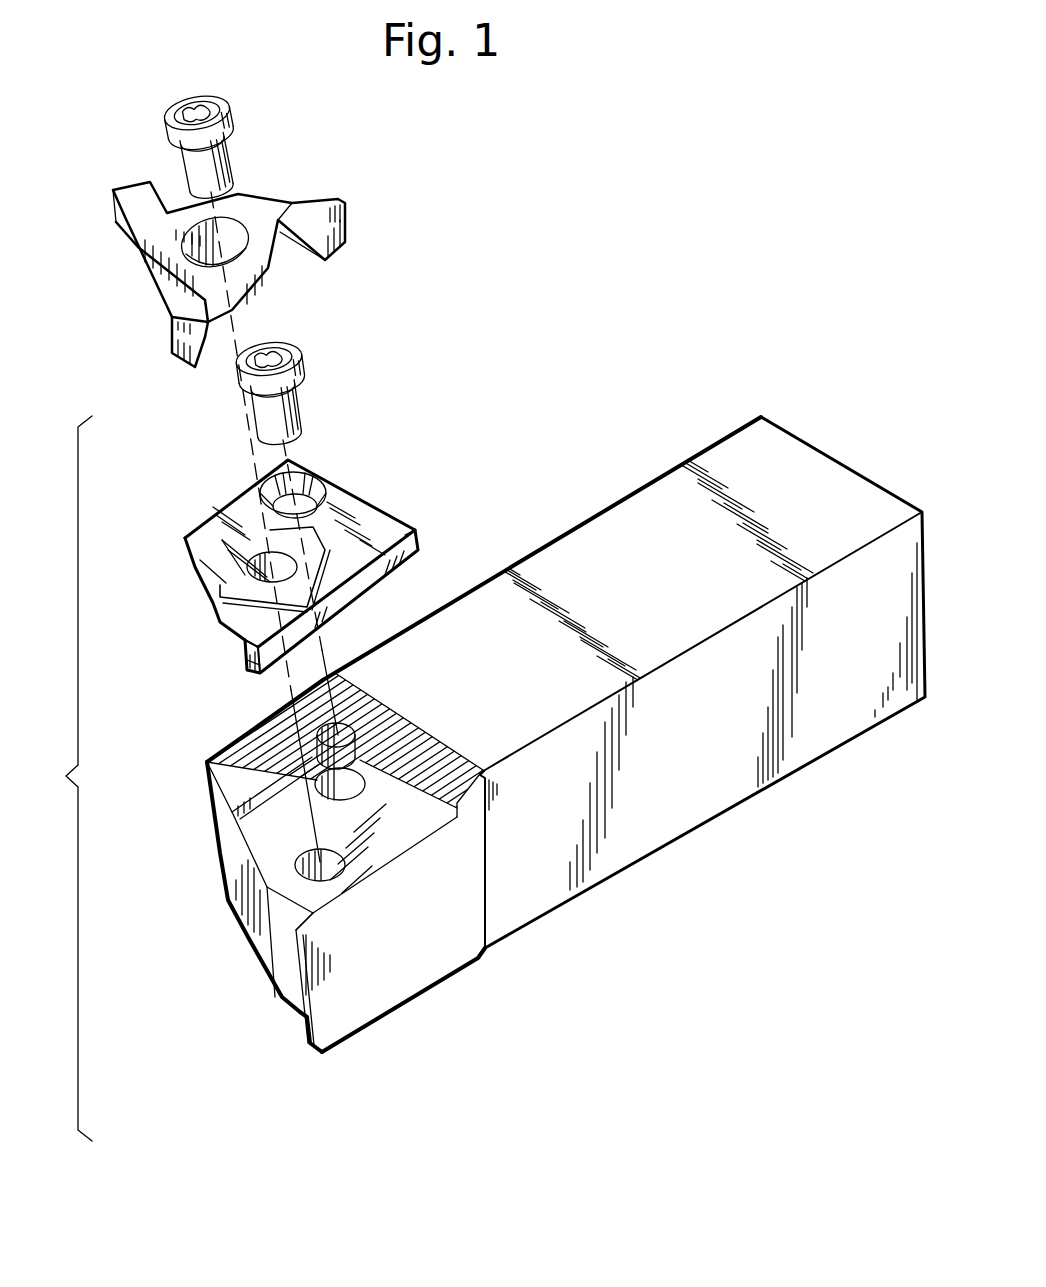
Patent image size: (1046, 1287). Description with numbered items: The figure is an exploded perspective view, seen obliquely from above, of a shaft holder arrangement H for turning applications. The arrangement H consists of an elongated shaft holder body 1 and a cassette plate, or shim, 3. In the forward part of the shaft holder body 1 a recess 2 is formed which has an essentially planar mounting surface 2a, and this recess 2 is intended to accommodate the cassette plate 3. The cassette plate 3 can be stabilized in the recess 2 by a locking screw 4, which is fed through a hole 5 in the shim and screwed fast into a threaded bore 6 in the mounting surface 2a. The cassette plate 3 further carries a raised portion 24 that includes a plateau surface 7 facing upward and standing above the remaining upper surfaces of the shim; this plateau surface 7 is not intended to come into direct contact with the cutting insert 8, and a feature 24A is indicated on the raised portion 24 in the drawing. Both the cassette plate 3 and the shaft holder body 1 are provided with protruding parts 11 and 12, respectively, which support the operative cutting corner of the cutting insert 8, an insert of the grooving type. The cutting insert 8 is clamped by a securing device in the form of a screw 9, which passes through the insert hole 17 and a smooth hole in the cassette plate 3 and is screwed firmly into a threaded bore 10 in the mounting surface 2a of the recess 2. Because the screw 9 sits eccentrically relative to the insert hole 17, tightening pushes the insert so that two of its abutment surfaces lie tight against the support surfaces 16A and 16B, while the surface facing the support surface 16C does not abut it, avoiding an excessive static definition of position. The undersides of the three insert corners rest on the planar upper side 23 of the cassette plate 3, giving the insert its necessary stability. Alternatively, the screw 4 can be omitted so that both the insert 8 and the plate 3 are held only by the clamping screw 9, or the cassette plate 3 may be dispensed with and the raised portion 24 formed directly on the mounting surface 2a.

The shaft holder body 1 is at (712, 787).
The recess 2 is at (397, 860).
The mounting surface 2a is at (381, 837).
The cassette plate 3 is at (392, 501).
The locking screw 4 is at (300, 413).
The hole 5 is at (290, 505).
The threaded bore 6 is at (207, 762).
The plateau surface 7 is at (226, 583).
The cutting insert 8 is at (277, 202).
The screw 9 is at (212, 165).
The threaded bore 10 is at (296, 866).
The protruding part 11 is at (248, 642).
The protruding part 12 is at (295, 932).
The support surface 16A is at (318, 555).
The support surface 16B is at (220, 612).
The support surface 16C is at (245, 548).
The insert hole 17 is at (232, 249).
The planar upper side 23 is at (342, 505).
The raised portion 24 is at (246, 536).
The insert central hole 24A is at (250, 562).
The shaft holder arrangement H is at (62, 778).